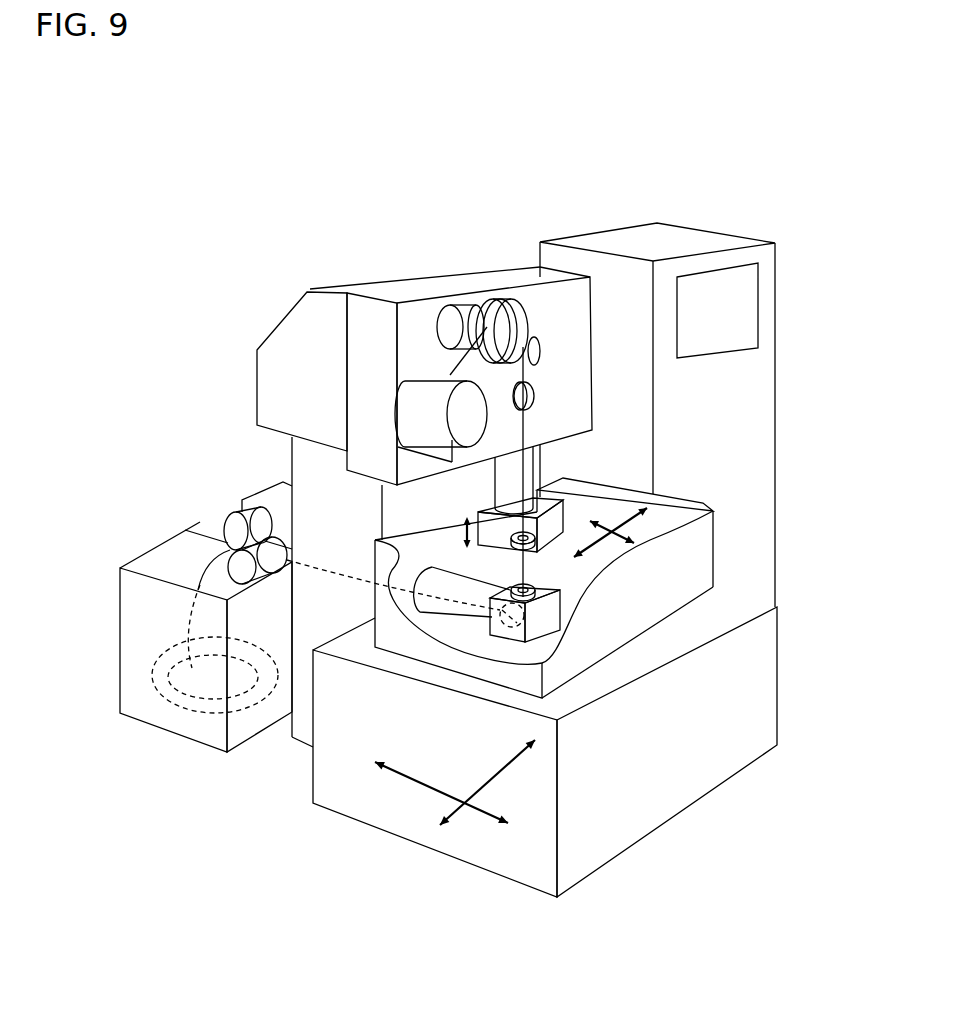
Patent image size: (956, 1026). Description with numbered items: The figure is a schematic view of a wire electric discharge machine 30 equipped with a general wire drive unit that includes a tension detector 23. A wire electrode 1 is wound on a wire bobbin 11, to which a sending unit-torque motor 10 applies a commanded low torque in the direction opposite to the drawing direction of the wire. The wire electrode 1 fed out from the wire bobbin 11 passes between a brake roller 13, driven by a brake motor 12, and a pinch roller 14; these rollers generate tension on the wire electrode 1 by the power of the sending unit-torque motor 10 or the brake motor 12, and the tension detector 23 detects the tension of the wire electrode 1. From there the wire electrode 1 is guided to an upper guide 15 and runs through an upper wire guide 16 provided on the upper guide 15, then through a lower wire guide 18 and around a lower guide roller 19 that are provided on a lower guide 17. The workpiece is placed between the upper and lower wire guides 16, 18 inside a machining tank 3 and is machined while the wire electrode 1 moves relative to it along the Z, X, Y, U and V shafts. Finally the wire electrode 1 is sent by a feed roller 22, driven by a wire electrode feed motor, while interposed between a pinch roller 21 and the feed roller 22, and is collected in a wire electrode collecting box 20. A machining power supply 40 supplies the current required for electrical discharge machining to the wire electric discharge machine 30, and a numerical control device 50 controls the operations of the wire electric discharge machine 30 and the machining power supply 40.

The wire electrode 1 is at (530, 432).
The machining tank 3 is at (700, 557).
The sending unit-torque motor 10 is at (397, 383).
The wire bobbin 11 is at (422, 388).
The brake motor 12 is at (460, 310).
The brake roller 13 is at (503, 297).
The pinch roller 14 is at (540, 338).
The upper guide 15 is at (565, 500).
The upper wire guide 16 is at (585, 500).
The lower guide 17 is at (535, 642).
The lower wire guide 18 is at (545, 592).
The lower guide roller 19 is at (493, 633).
The wire electrode collecting box 20 is at (130, 640).
The pinch roller 21 is at (235, 520).
The feed roller 22 is at (238, 567).
The tension detector 23 is at (530, 386).
The wire electric discharge machine 30 is at (203, 246).
The machining power supply 40 is at (660, 224).
The numerical control device 50 is at (762, 296).